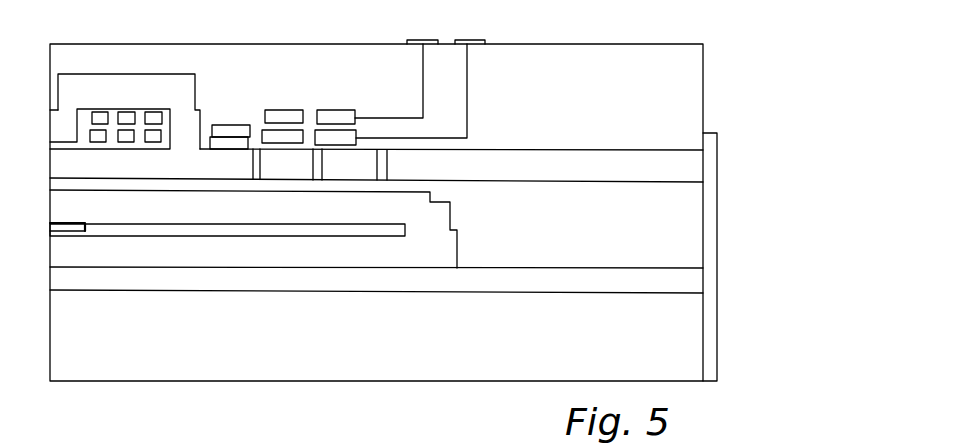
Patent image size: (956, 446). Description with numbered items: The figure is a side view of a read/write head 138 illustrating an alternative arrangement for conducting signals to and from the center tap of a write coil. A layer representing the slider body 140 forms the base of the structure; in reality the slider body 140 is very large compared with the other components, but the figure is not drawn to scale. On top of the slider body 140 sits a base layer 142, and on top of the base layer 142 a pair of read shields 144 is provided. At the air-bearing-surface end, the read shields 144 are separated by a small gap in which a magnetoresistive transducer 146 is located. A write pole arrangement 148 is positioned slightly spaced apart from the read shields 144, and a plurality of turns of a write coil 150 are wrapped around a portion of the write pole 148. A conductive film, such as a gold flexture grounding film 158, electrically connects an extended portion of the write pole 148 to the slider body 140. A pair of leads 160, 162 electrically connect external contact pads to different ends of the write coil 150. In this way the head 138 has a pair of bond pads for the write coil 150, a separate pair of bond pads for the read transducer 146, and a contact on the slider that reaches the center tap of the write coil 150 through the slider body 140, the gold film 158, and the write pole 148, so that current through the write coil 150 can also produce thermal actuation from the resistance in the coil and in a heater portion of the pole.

The read/write head 138 is at (737, 99).
The slider body 140 is at (330, 354).
The base layer 142 is at (400, 291).
The read shields 144 is at (352, 263).
The magnetoresistive transducer 146 is at (72, 233).
The write pole arrangement 148 is at (206, 117).
The write coil 150 is at (126, 120).
The gold flexture grounding film 158 is at (705, 236).
The lead 160 is at (423, 93).
The lead 162 is at (467, 108).